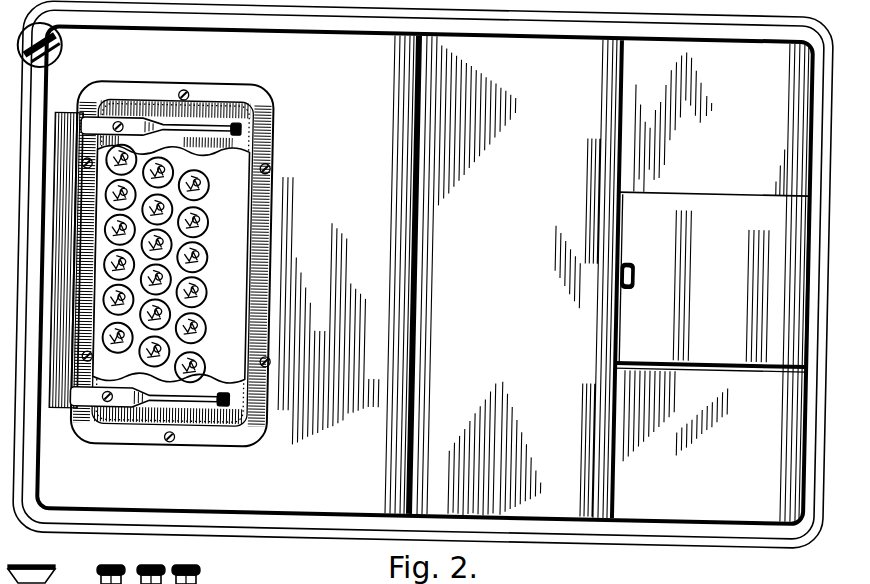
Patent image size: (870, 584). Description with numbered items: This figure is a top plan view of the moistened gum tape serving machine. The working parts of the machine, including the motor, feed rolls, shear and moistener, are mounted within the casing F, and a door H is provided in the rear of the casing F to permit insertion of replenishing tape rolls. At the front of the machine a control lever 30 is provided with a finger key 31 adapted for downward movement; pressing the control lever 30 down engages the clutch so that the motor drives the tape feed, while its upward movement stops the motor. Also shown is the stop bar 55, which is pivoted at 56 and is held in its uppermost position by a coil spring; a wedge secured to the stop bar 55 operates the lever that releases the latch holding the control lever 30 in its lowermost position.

The control lever 30 is at (104, 574).
The finger key 31 is at (57, 52).
The stop bar 55 is at (61, 120).
The pivot of stop bar 56 is at (236, 122).
The casing F is at (527, 70).
The door H is at (712, 282).